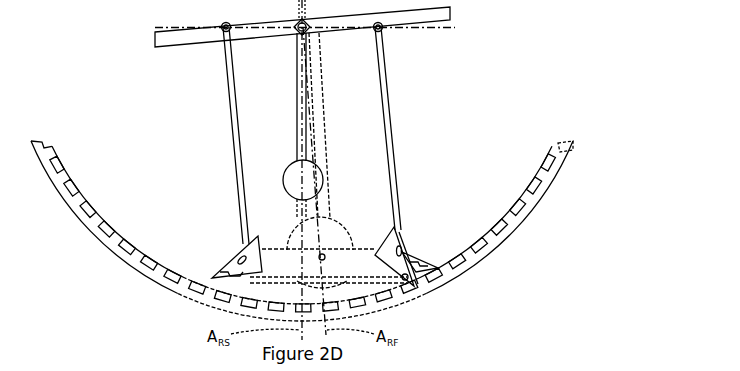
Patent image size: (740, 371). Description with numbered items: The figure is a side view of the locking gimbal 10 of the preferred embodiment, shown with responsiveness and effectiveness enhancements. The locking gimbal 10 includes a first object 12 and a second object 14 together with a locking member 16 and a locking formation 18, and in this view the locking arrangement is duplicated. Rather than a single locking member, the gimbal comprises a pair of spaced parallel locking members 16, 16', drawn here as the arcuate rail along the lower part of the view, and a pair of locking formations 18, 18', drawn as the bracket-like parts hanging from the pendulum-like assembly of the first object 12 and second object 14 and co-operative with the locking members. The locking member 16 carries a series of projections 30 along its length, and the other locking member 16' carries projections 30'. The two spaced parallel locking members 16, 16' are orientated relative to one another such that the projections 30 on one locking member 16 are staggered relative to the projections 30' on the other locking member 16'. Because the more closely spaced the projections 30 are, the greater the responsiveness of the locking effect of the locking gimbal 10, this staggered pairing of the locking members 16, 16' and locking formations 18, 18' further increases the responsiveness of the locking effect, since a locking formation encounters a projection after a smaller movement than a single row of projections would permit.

The locking gimbal 10 is at (637, 140).
The first object 12 is at (322, 123).
The second object 14 is at (297, 118).
The locking member 16 is at (302, 231).
The locking member 16' is at (580, 176).
The locking formation 18 is at (318, 241).
The locking formation 18' is at (336, 246).
The projections 30 is at (303, 220).
The projections 30' is at (306, 209).